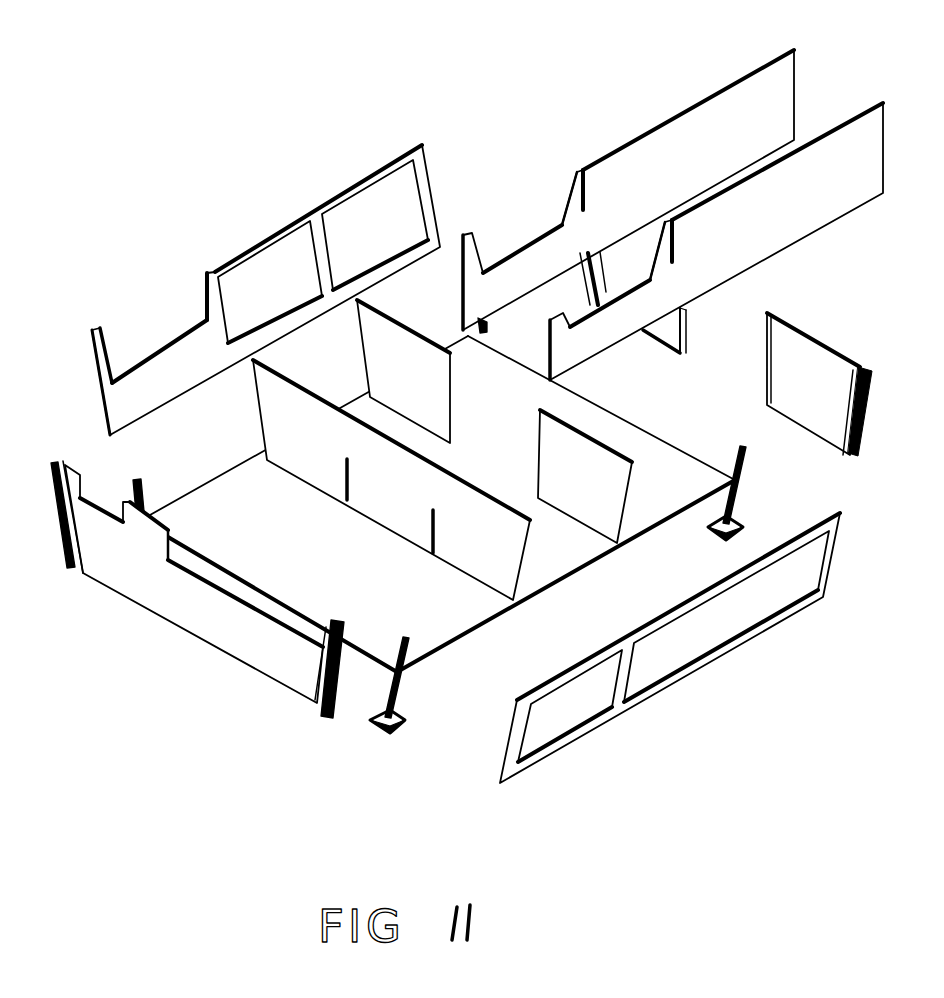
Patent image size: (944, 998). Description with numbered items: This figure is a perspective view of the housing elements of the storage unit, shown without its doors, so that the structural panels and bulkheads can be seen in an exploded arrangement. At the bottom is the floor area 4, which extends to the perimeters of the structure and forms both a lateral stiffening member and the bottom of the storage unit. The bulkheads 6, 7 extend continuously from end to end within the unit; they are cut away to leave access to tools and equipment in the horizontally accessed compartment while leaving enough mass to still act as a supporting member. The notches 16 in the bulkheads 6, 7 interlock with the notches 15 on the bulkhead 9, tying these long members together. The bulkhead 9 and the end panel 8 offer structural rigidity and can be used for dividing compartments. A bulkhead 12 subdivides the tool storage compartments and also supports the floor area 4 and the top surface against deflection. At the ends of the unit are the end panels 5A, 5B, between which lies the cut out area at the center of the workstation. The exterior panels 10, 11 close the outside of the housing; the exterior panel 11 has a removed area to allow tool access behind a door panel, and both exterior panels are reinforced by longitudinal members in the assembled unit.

The floor area 4 is at (672, 452).
The end panel 5A is at (668, 325).
The end panel 5B is at (825, 365).
The bulkhead 6 is at (740, 102).
The bulkhead 7 is at (863, 143).
The end panel 8 is at (260, 656).
The bulkhead 9 is at (507, 582).
The exterior panel 10 is at (713, 652).
The exterior panel 11 is at (207, 272).
The bulkhead 12 is at (613, 513).
The notches 15 is at (432, 523).
The notches 16 is at (655, 243).